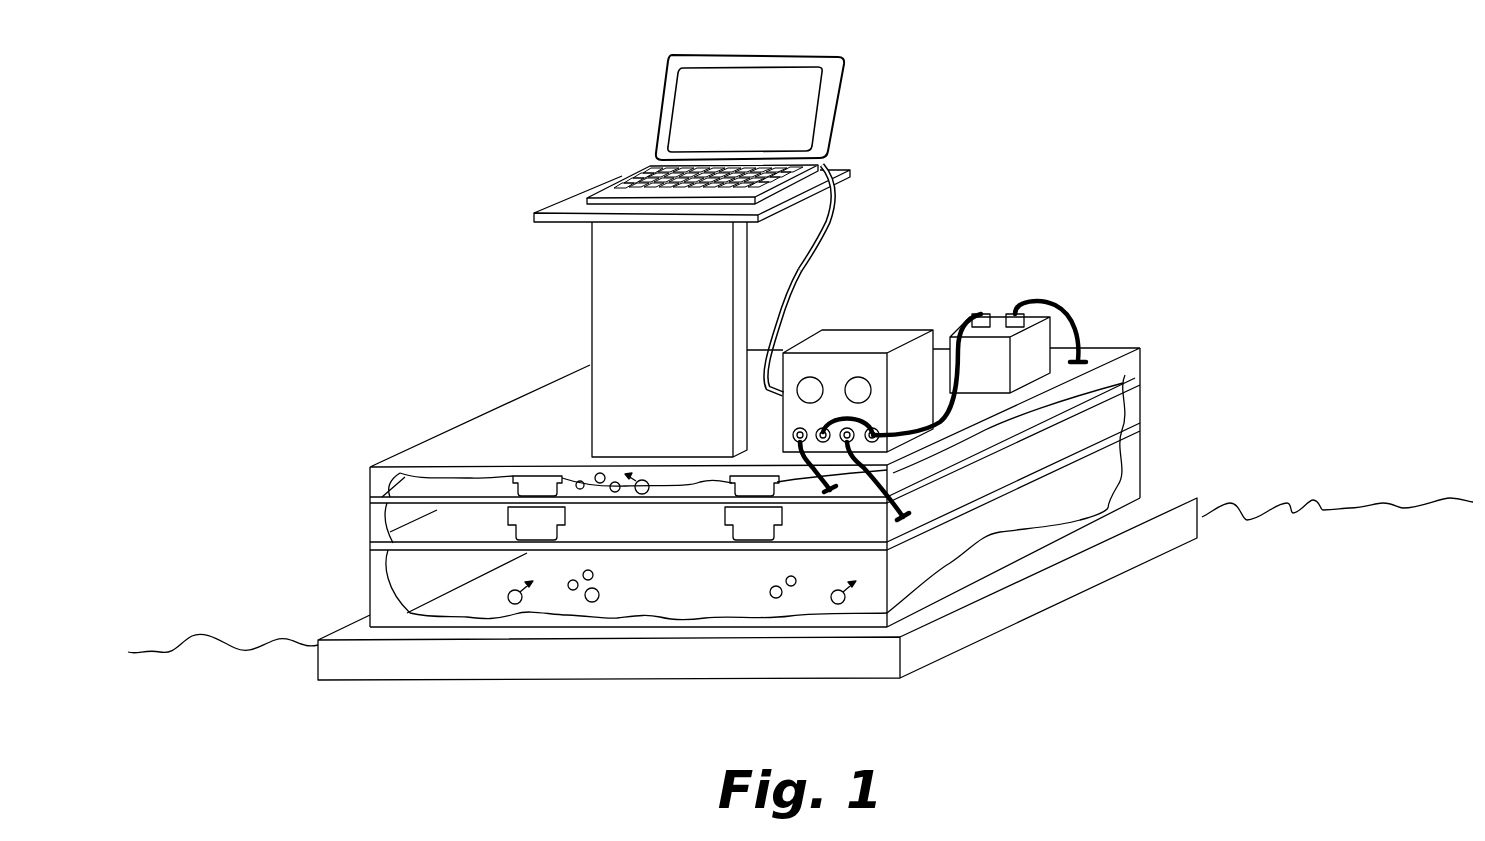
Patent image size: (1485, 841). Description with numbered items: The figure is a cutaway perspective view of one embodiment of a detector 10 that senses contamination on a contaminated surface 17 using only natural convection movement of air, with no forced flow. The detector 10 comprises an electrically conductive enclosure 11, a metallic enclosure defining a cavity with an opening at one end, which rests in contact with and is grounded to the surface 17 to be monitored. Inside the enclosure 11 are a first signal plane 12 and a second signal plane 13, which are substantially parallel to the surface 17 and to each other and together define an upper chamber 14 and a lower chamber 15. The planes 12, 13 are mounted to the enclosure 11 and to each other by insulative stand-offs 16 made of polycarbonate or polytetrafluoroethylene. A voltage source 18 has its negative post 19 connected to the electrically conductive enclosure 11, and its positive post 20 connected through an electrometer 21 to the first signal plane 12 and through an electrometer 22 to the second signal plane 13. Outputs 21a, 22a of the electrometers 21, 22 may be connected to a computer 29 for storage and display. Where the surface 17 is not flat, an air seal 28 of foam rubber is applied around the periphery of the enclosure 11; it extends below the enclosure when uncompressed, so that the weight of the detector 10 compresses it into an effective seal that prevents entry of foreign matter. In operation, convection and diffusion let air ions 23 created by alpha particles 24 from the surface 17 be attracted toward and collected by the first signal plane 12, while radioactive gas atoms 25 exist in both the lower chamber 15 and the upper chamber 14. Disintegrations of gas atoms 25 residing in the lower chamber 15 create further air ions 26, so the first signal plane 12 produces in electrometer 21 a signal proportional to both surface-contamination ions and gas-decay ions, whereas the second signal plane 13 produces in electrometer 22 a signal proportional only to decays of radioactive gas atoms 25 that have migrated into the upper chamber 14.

The detector 10 is at (1092, 205).
The electrically conductive enclosure 11 is at (548, 383).
The first signal plane 12 is at (420, 547).
The second signal plane 13 is at (378, 467).
The upper chamber 14 is at (1080, 423).
The lower chamber 15 is at (988, 540).
The insulative stand-offs 16 is at (508, 512).
The contaminated surface 17 is at (188, 640).
The voltage source 18 is at (950, 337).
The negative post 19 is at (1015, 312).
The positive post 20 is at (981, 312).
The electrometer 21 is at (856, 376).
The output 21a is at (828, 220).
The electrometer 22 is at (804, 376).
The output 22a is at (793, 275).
The air ions 23 is at (594, 573).
The alpha particles 24 is at (511, 590).
The radioactive gas atoms 25 is at (646, 491).
The air ions 26 is at (580, 489).
The air seal 28 is at (942, 647).
The computer 29 is at (840, 108).